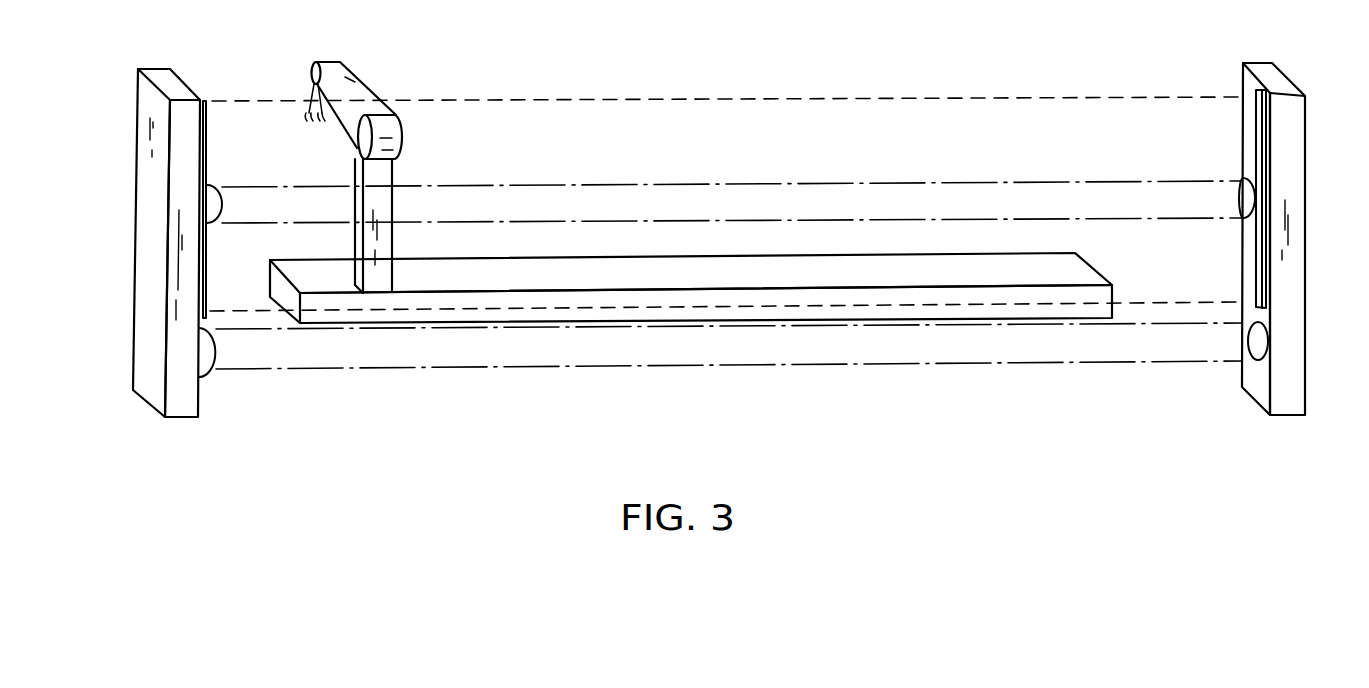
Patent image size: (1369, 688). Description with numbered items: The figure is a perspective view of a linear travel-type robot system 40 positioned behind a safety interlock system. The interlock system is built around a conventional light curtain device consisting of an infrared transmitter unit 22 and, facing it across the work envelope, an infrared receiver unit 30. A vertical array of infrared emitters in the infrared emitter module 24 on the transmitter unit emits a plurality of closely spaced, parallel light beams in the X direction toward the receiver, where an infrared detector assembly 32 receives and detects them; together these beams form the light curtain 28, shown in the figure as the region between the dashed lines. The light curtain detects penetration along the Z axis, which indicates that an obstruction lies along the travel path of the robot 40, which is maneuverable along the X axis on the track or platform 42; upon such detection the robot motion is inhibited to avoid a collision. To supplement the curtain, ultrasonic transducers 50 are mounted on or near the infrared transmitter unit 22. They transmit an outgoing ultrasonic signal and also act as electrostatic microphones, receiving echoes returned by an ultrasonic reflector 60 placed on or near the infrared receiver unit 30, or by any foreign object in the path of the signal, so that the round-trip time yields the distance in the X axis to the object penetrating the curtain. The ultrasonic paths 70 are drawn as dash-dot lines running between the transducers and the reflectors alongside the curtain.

The infrared transmitter unit 22 is at (153, 263).
The infrared emitter module 24 is at (207, 101).
The light curtain 28 is at (1040, 135).
The infrared receiver unit 30 is at (1295, 146).
The infrared detector assembly 32 is at (1253, 92).
The linear travel-type robot system 40 is at (356, 83).
The platform 42 is at (682, 270).
The ultrasonic transducers 50 is at (218, 195).
The ultrasonic reflector 60 is at (1245, 195).
The ultrasonic beam paths 70 is at (473, 200).